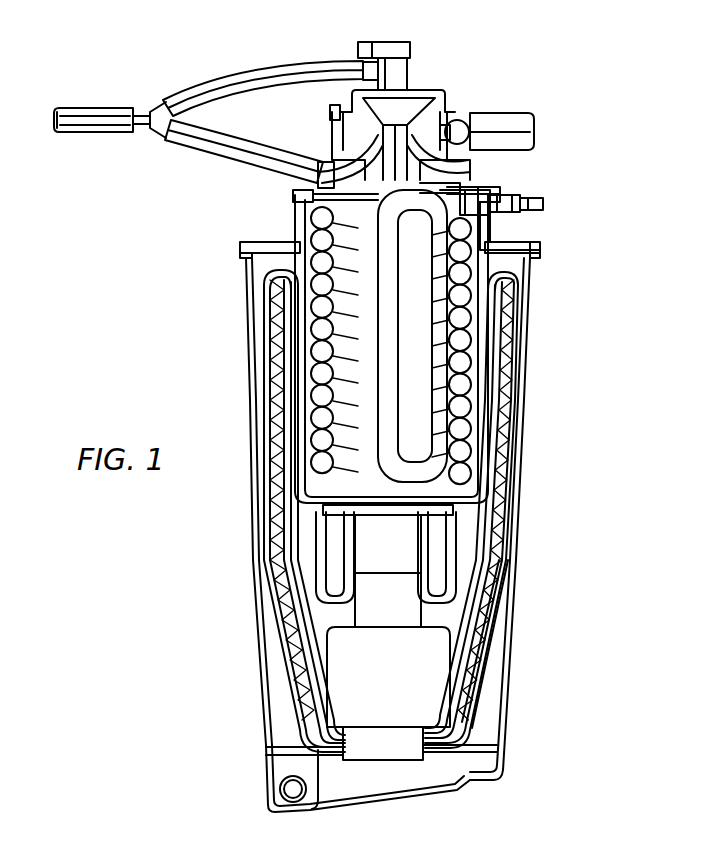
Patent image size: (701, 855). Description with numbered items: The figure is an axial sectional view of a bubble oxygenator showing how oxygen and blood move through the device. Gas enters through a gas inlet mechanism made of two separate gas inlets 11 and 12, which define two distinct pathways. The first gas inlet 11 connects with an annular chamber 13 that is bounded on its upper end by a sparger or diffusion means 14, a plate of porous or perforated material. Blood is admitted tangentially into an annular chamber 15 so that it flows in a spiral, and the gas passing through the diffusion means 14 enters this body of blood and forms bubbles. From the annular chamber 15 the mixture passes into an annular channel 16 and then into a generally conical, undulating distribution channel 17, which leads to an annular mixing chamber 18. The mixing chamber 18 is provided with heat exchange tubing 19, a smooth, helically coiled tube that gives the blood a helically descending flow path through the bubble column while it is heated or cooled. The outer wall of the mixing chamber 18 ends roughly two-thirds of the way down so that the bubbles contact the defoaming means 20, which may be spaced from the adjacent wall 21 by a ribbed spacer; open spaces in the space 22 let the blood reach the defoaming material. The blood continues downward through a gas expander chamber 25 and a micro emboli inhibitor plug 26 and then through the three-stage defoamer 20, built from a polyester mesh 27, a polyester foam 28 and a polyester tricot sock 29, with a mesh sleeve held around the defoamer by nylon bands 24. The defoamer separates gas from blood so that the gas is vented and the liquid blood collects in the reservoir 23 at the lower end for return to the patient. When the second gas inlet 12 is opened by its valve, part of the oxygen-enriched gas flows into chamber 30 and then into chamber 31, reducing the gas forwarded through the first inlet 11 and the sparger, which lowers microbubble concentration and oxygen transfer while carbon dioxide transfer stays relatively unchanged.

The gas inlet 11 is at (195, 131).
The gas inlet 12 is at (333, 58).
The annular chamber 13 is at (450, 158).
The diffusion means 14 is at (437, 153).
The annular chamber 15 is at (332, 130).
The annular channel 16 is at (437, 117).
The undulating distribution channel 17 is at (305, 197).
The annular mixing chamber 18 is at (297, 200).
The heat exchange tubing 19 is at (313, 218).
The defoaming means 20 is at (508, 412).
The wall 21 is at (300, 325).
The space 22 is at (293, 400).
The reservoir 23 is at (500, 660).
The nylon bands 24 is at (487, 265).
The gas expander chamber 25 is at (330, 560).
The micro emboli inhibitor plug 26 is at (362, 603).
The polyester mesh 27 is at (503, 363).
The polyester foam 28 is at (507, 513).
The polyester tricot sock 29 is at (513, 458).
The chamber 30 is at (400, 118).
The chamber 31 is at (300, 179).